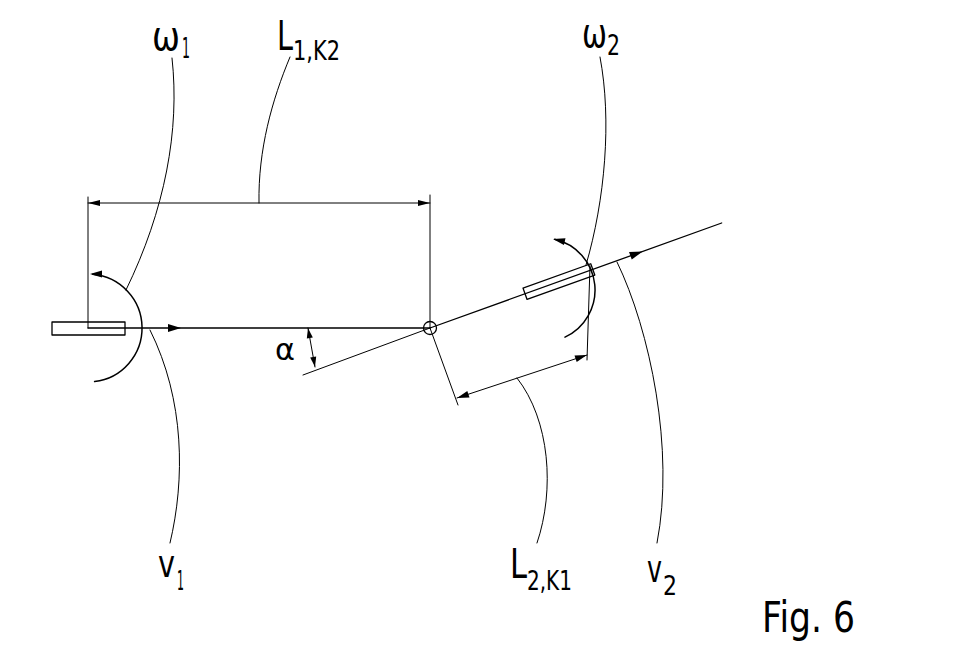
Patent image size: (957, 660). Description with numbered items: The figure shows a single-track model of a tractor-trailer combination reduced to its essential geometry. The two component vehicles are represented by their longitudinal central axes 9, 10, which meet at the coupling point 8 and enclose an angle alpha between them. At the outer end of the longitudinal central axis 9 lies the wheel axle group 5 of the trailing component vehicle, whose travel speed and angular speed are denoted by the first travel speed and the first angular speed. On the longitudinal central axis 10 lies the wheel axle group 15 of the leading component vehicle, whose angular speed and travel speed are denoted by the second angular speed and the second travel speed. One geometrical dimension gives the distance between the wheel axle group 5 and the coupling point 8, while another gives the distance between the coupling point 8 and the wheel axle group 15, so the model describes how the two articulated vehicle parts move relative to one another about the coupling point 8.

The wheel axle group 5 is at (68, 336).
The coupling point 8 is at (427, 335).
The longitudinal central axis 9 is at (247, 330).
The longitudinal central axis 10 is at (502, 300).
The wheel axle group 15 is at (547, 273).